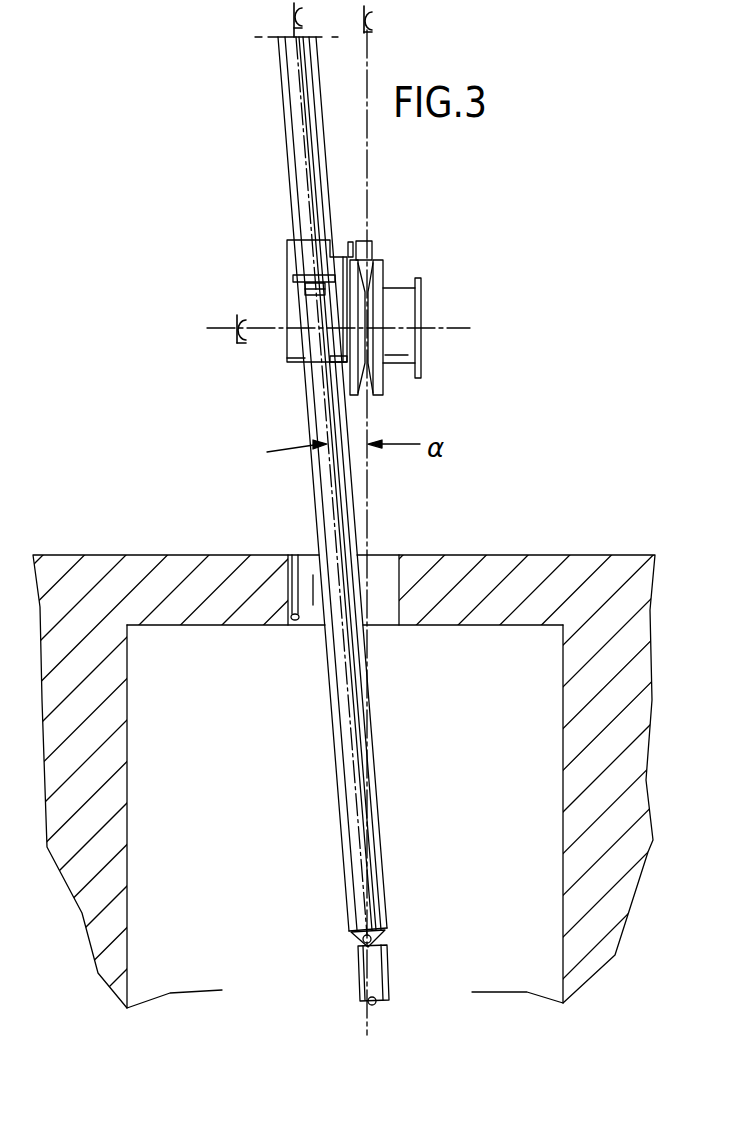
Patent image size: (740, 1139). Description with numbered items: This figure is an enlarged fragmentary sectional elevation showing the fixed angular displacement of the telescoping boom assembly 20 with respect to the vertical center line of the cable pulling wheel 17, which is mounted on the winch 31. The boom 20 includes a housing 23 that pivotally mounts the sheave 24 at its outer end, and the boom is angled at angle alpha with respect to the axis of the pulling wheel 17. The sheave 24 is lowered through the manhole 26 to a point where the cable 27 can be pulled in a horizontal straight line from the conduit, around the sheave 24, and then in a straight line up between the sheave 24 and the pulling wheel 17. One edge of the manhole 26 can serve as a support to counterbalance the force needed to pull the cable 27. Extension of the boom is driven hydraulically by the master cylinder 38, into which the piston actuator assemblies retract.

The cable pulling wheel 17 is at (383, 273).
The telescoping boom assembly 20 is at (320, 489).
The housing 23 is at (304, 178).
The sheave 24 is at (356, 987).
The manhole 26 is at (293, 621).
The cable 27 is at (370, 1004).
The winch 31 is at (421, 378).
The master cylinder 38 is at (293, 104).